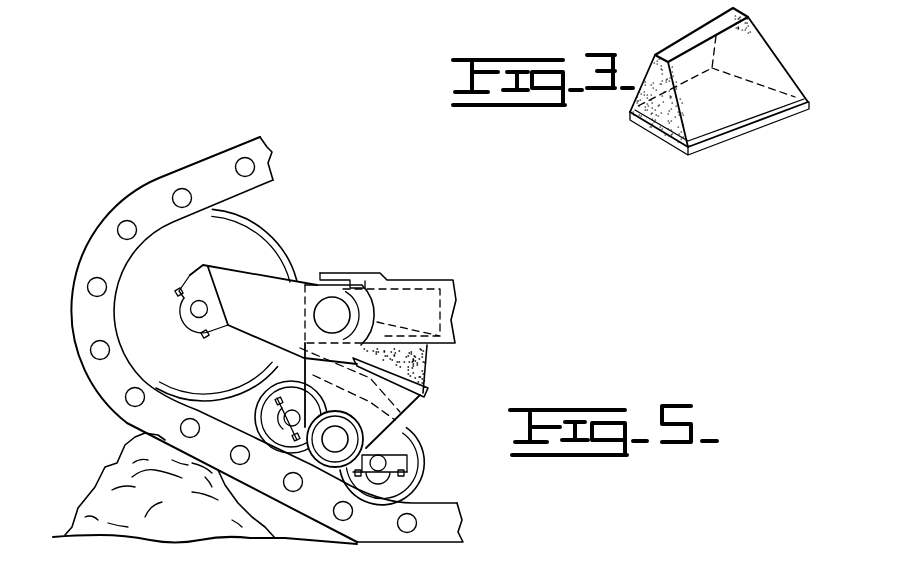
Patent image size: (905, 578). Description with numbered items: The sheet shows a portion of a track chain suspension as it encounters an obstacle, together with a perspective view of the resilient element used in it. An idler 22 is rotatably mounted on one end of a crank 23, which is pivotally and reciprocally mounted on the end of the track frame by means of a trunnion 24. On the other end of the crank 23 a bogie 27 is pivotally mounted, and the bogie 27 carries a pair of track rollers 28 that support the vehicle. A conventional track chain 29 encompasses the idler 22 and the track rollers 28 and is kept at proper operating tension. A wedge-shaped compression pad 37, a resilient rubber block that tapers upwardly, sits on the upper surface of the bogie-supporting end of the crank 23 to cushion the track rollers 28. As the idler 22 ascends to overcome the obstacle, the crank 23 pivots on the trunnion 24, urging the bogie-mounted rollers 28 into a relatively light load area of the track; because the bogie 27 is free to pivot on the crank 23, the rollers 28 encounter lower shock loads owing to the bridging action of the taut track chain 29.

In FIG. 5, the idler 22 is at (201, 375).
In FIG. 5, the crank 23 is at (273, 313).
In FIG. 5, the trunnion 24 is at (327, 305).
In FIG. 5, the bogie 27 is at (397, 437).
In FIG. 5, the track roller 28 is at (277, 380).
In FIG. 5, the track chain 29 is at (192, 173).
In FIG. 3, the compression pad 37 is at (753, 53).
In FIG. 5, the compression pad 37 is at (427, 362).